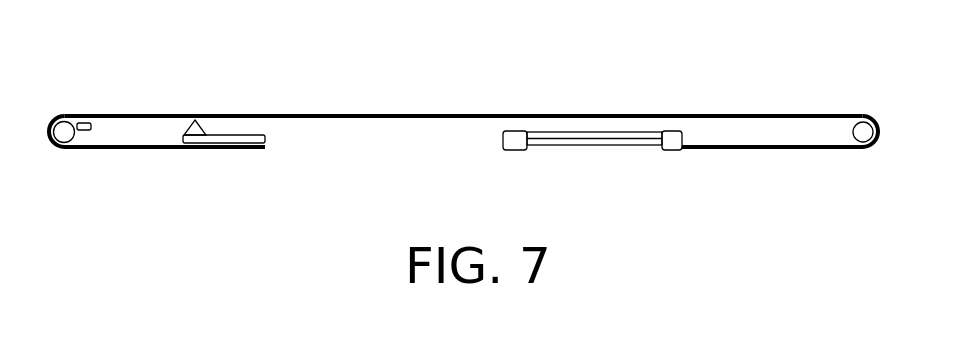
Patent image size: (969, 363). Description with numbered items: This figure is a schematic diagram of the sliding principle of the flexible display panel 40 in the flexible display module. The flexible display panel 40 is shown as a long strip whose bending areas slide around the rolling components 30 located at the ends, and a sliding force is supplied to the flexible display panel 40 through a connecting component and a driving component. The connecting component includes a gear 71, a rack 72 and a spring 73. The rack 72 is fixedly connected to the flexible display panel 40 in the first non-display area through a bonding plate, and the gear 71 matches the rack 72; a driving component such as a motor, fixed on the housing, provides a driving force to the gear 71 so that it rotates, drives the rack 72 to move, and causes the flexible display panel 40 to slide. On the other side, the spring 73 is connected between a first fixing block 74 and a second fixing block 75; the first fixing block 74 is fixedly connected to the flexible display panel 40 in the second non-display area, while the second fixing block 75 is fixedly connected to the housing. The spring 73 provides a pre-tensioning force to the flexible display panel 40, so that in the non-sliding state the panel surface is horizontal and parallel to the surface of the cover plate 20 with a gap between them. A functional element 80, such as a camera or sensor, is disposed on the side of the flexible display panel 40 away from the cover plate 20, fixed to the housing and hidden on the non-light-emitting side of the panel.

The cover plate 20 is at (463, 131).
The rolling components 30 is at (62, 140).
The flexible display panel 40 is at (780, 149).
The gear 71 is at (197, 128).
The rack 72 is at (258, 140).
The spring 73 is at (582, 140).
The first fixing block 74 is at (675, 141).
The second fixing block 75 is at (512, 143).
The functional element 80 is at (88, 128).